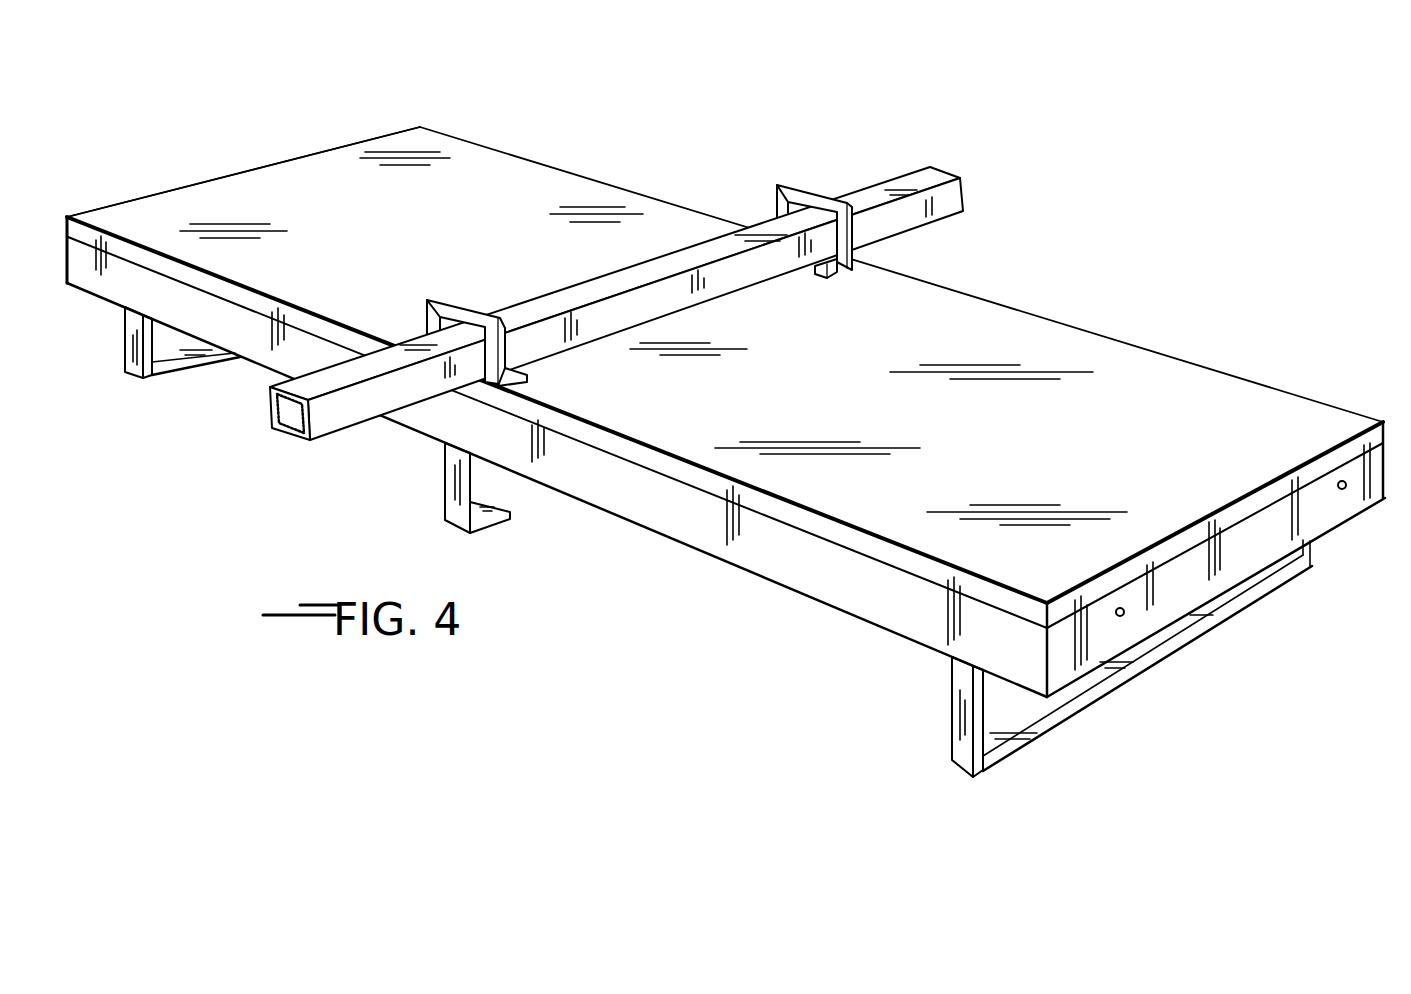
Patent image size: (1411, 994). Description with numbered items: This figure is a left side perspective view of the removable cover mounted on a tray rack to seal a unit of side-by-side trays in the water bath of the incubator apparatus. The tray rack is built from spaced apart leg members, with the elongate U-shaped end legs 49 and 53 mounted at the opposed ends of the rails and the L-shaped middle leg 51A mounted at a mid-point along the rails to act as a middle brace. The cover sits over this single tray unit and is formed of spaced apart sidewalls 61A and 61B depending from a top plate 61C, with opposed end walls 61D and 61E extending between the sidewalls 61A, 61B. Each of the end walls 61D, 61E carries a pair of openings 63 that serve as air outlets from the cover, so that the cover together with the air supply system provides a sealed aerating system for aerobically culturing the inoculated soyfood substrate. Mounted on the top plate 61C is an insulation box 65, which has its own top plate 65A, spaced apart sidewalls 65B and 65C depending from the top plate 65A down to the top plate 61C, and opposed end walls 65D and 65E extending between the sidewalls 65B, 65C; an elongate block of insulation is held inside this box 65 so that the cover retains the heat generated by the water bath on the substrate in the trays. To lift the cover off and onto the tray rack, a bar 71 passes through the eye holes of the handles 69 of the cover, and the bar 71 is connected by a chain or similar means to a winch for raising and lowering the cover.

The end leg member 49 is at (133, 383).
The middle leg member 51A is at (447, 488).
The end leg member 53 is at (953, 770).
The sidewall 61A is at (810, 572).
The sidewall 61B is at (1392, 478).
The top plate 61C is at (1228, 573).
The end wall 61D is at (1165, 555).
The end wall 61E is at (63, 256).
The openings 63 is at (1342, 484).
The insulation box 65 is at (1103, 322).
The top plate 65A is at (970, 320).
The sidewall 65B is at (688, 472).
The sidewall 65C is at (1388, 423).
The end wall 65D is at (1253, 522).
The end wall 65E is at (70, 212).
The handles 69 is at (440, 306).
The bar 71 is at (937, 178).